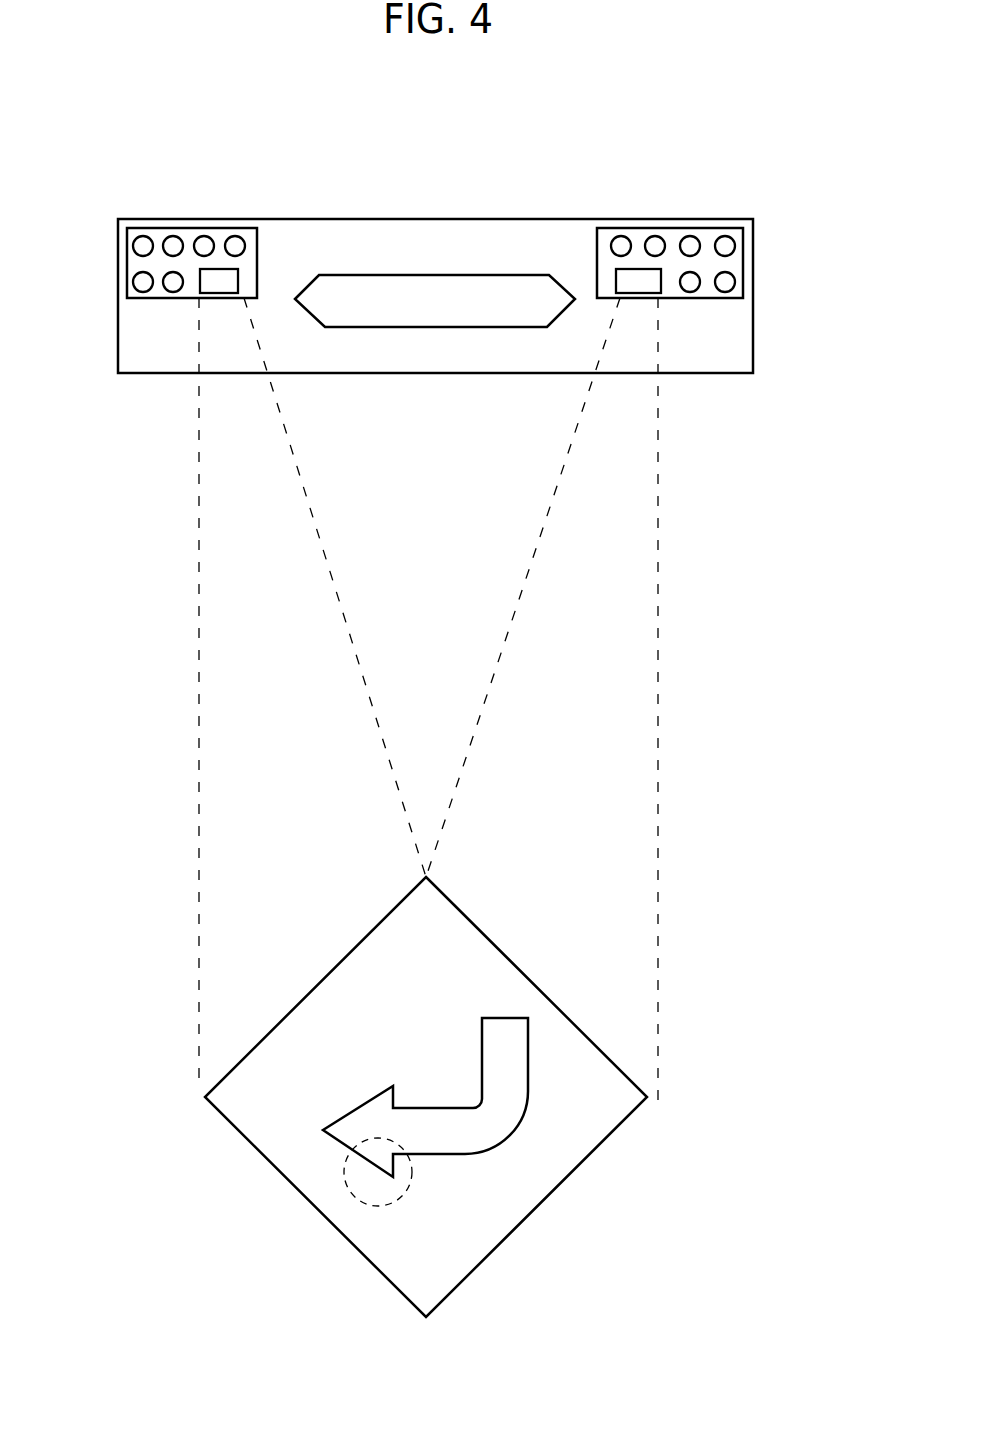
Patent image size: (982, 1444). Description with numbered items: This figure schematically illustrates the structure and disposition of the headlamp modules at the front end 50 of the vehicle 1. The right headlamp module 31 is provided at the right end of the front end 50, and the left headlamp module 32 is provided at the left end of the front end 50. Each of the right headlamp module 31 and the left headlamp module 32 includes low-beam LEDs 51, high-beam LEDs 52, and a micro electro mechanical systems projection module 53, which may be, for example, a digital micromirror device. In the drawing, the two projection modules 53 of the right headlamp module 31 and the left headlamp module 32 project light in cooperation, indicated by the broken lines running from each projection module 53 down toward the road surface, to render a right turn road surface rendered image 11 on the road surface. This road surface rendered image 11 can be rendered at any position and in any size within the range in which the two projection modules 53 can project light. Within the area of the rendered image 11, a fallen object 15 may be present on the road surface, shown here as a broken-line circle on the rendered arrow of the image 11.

The vehicle 1 is at (481, 174).
The front end 50 is at (423, 219).
The right headlamp module 31 is at (203, 219).
The left headlamp module 32 is at (657, 219).
The low-beam LEDs 51 is at (137, 295).
The high-beam LEDs 52 is at (147, 238).
The MEMS projection module 53 is at (238, 277).
The right turn road surface rendered image 11 is at (268, 1103).
The fallen object 15 is at (352, 1185).